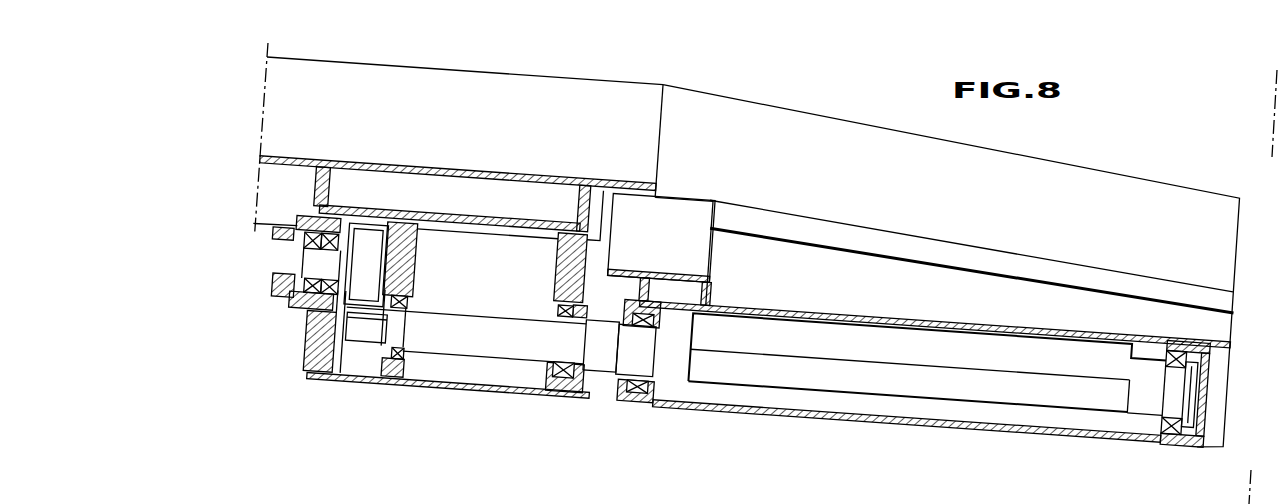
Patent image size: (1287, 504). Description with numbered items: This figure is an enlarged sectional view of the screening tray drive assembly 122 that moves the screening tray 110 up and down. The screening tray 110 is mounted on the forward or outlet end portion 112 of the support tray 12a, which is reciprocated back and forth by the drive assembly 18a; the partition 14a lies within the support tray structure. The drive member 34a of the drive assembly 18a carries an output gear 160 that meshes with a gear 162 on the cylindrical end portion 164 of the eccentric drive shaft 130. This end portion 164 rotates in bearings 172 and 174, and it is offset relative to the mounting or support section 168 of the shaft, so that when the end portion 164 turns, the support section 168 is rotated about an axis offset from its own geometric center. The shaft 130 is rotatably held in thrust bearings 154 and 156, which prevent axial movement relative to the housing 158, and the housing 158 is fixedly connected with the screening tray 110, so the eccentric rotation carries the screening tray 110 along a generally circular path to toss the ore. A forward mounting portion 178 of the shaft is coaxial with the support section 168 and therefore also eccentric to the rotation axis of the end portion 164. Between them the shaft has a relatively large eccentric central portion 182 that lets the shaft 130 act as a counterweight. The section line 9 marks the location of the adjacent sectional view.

The support tray 12a is at (440, 62).
The forward or outlet end portion 112 is at (645, 90).
The partition plate 14a is at (653, 176).
The screening tray 110 is at (818, 114).
The output gear 160 is at (367, 262).
The bearing 174 is at (560, 310).
The drive member 34a is at (288, 302).
The drive assembly 18a is at (296, 368).
The gear 162 is at (360, 327).
The bearing 172 is at (392, 390).
The cylindrical end portion 164 is at (457, 340).
The mounting or support section 168 is at (634, 355).
The thrust bearing 154 is at (632, 402).
The screening tray drive assembly 122 is at (695, 412).
The housing 158 is at (876, 292).
The eccentric shaft 130 is at (791, 372).
The eccentric central portion 182 is at (982, 384).
The thrust bearing 156 is at (1176, 446).
The forward mounting portion 178 is at (1177, 389).
The section line 9 is at (1276, 103).